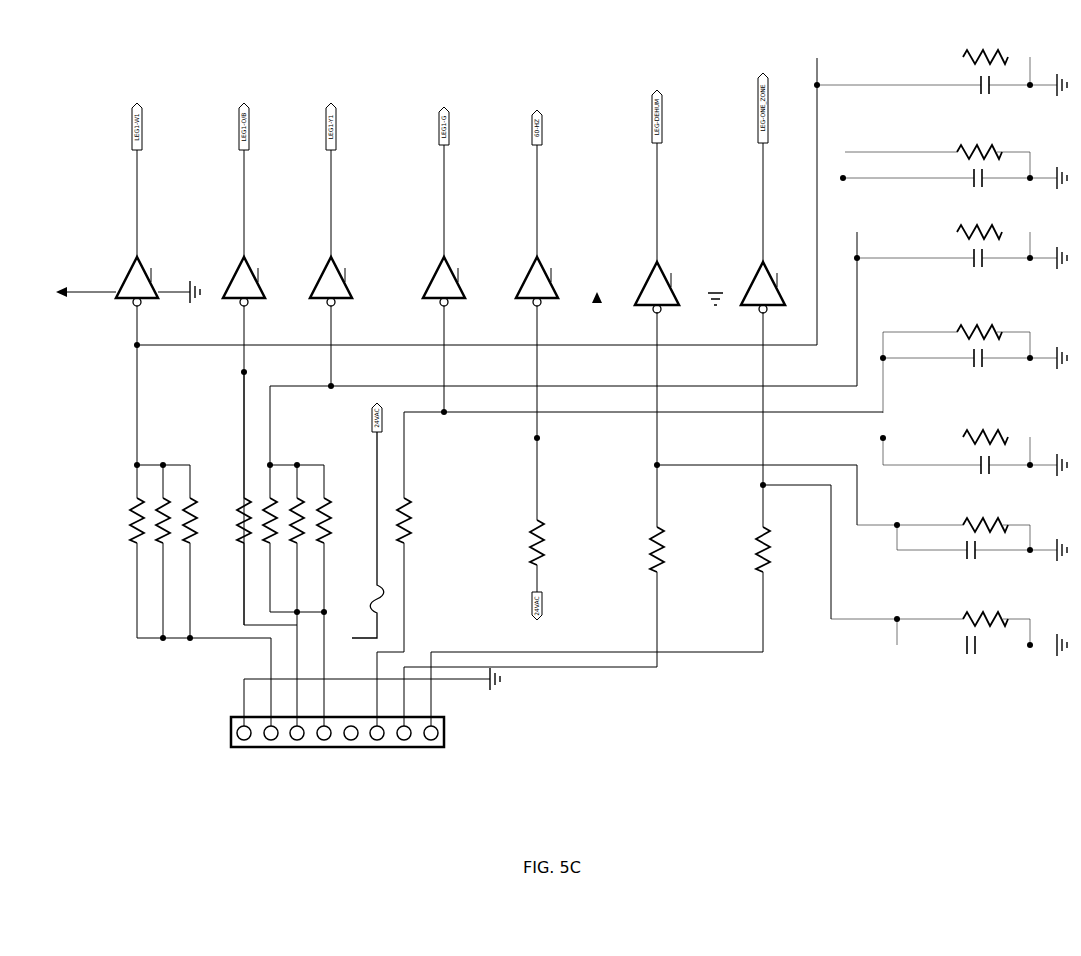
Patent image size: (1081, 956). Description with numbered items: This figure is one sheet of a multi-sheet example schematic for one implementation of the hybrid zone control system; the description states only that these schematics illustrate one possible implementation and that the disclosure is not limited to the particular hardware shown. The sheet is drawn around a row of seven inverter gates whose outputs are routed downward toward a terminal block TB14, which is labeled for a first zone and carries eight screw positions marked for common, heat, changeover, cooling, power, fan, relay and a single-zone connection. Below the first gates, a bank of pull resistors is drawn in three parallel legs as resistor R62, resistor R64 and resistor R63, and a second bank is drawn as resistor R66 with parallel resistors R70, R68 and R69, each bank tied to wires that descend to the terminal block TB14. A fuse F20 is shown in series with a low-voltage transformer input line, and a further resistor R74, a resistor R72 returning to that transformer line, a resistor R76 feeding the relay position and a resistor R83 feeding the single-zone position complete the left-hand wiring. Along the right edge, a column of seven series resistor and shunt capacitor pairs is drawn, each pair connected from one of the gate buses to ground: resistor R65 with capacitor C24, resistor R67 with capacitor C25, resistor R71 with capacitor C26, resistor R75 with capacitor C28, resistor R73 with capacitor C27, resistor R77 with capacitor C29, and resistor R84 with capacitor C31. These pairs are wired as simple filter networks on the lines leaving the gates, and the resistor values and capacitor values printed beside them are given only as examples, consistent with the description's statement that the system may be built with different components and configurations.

The resistor 2.4K 1W R62 is at (128, 548).
The resistor 2.4K 1W R63 is at (182, 551).
The resistor 2.4K 1W R64 is at (155, 551).
The resistor 2.4K 1W R66 is at (234, 498).
The resistor 2.4K 1W R68 is at (289, 538).
The resistor 2.4K 1W R69 is at (329, 538).
The resistor 2.4K 1W R70 is at (262, 538).
The resistor 6.8K R72 is at (538, 513).
The resistor 2.4K 1W R74 is at (404, 569).
The resistor 2.4K 1W R76 is at (546, 619).
The resistor 2.4K 1W R83 is at (612, 626).
The fuse 0.14A F20 is at (363, 535).
The terminal block Zone 1 TB14 is at (333, 750).
The resistor 82 ohm R65 is at (982, 61).
The resistor 240 ohm R67 is at (947, 153).
The resistor 82 ohm R71 is at (975, 233).
The resistor 240 ohm R75 is at (966, 361).
The resistor 680 ohm R73 is at (967, 440).
The resistor 240 ohm R77 is at (953, 526).
The resistor 240 ohm R84 is at (940, 620).
The capacitor .1uF C24 is at (942, 90).
The capacitor .1uF C25 is at (953, 183).
The capacitor .1uF C26 is at (960, 263).
The capacitor .1uF C27 is at (975, 469).
The capacitor .1uF C28 is at (973, 363).
The capacitor .1uF C29 is at (982, 555).
The capacitor .1uF C31 is at (994, 650).